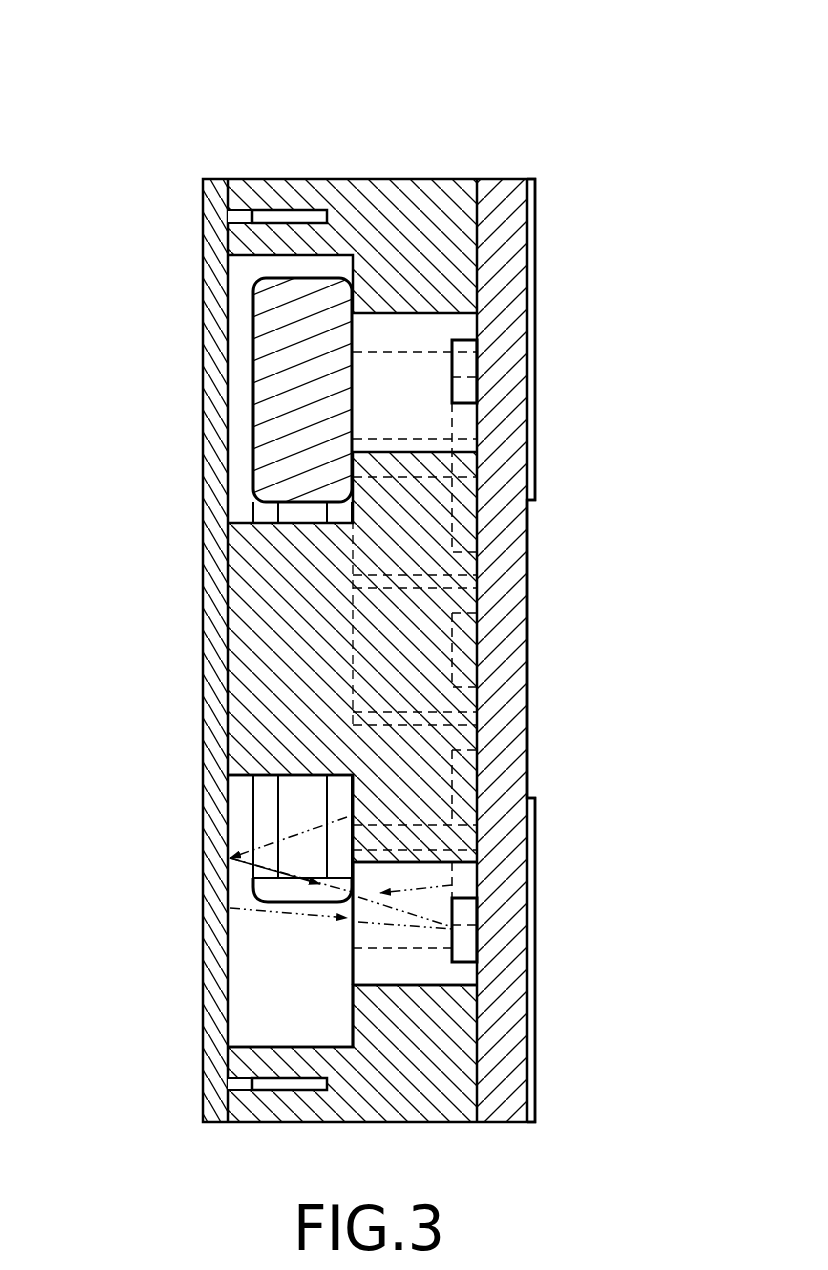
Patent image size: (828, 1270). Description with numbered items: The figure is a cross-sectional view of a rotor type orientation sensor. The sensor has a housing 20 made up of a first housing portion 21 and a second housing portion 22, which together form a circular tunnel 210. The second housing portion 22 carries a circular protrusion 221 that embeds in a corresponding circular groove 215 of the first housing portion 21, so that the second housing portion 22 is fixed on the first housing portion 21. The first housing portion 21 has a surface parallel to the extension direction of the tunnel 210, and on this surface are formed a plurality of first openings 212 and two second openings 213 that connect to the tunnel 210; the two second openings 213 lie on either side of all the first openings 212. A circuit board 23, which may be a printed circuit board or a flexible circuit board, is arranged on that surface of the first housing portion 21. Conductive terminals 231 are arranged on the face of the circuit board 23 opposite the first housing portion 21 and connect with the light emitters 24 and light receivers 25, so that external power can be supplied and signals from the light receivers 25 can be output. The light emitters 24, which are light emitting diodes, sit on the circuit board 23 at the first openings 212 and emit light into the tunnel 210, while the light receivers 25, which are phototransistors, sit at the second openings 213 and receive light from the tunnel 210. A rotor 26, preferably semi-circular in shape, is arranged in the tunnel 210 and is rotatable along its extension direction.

The housing 20 is at (492, 58).
The first housing portion 21 is at (425, 193).
The second housing portion 22 is at (222, 283).
The circular protrusion 221 is at (245, 213).
The circular groove 215 is at (288, 218).
The circuit board 23 is at (504, 636).
The conductive terminals 231 is at (534, 340).
The light emitters 24 is at (367, 815).
The light receivers 25 is at (463, 933).
The rotor 26 is at (278, 393).
The tunnel 210 is at (277, 973).
The first openings 212 is at (430, 704).
The second openings 213 is at (422, 973).